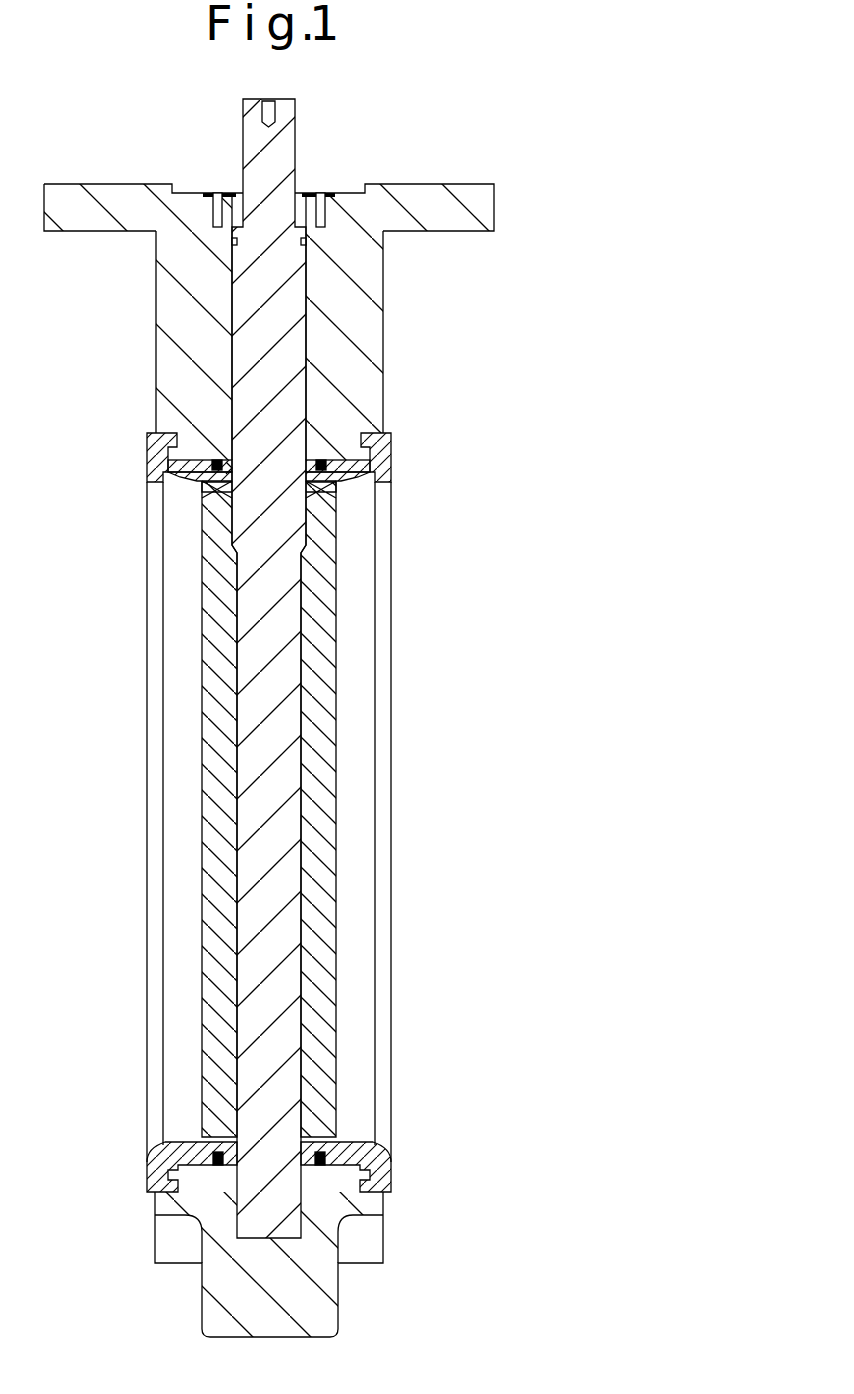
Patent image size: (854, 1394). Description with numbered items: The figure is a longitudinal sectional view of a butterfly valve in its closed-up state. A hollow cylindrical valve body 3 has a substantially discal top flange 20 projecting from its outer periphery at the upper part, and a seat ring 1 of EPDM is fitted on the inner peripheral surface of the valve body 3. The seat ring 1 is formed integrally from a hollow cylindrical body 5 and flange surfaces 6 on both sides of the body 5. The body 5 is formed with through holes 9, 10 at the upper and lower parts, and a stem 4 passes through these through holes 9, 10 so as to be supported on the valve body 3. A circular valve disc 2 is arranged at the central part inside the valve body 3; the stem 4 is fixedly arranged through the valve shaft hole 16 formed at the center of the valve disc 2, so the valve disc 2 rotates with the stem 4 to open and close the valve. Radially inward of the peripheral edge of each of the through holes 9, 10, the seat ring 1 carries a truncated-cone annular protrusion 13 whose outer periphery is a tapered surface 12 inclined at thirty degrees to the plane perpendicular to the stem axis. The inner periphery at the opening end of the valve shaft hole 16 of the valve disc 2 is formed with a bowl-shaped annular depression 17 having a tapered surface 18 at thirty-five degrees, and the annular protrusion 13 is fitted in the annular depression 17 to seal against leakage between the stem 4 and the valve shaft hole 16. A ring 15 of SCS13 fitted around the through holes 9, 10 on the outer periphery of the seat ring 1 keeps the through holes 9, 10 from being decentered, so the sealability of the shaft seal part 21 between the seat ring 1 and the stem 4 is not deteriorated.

The seat ring 1 is at (383, 433).
The valve disc 2 is at (315, 712).
The valve body 3 is at (343, 300).
The stem 4 is at (267, 368).
The body 5 is at (197, 477).
The flange surfaces 6 is at (147, 453).
The through hole 9 is at (370, 471).
The through hole 10 is at (390, 1150).
The tapered surface 12 is at (315, 480).
The annular protrusion 13 is at (228, 482).
The ring 15 is at (320, 468).
The valve shaft hole 16 is at (305, 650).
The annular depression 17 is at (215, 480).
The tapered surface 18 is at (312, 484).
The top flange 20 is at (428, 205).
The shaft seal part 21 is at (233, 458).